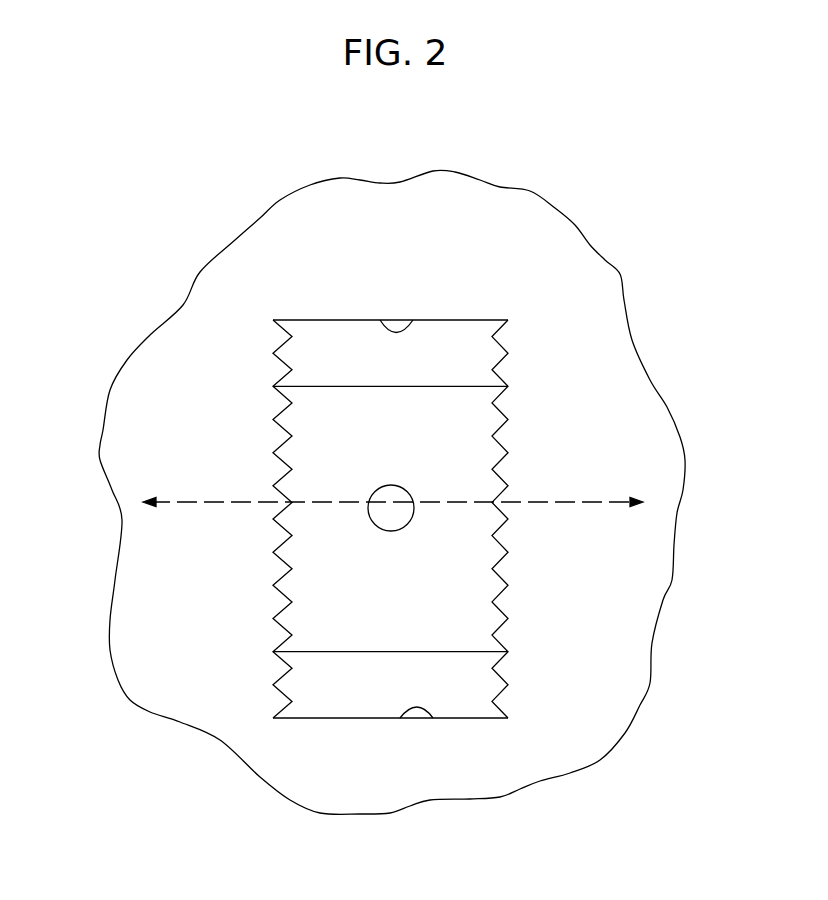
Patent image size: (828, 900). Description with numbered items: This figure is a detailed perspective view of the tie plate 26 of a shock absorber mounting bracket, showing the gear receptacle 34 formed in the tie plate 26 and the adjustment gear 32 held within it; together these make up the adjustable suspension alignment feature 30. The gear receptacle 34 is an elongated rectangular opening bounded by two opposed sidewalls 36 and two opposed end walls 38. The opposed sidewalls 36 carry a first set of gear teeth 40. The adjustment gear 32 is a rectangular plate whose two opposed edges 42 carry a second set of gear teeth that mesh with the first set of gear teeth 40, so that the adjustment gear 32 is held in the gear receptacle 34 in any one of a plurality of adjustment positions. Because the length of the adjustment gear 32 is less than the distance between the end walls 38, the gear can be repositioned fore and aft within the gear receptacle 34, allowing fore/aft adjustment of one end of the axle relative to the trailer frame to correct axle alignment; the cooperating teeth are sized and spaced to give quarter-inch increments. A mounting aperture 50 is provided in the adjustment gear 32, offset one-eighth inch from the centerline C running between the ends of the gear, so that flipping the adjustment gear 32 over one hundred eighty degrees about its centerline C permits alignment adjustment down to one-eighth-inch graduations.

The tie plate 26 is at (540, 248).
The adjustable suspension alignment feature 30 is at (394, 487).
The adjustment gear 32 is at (371, 448).
The gear receptacle 34 is at (333, 692).
The opposed sidewalls 36 is at (297, 520).
The opposed end walls 38 is at (383, 331).
The first set of gear teeth 40 is at (283, 420).
The opposed edges 42 is at (280, 437).
The mounting aperture 50 is at (395, 531).
The centerline C is at (573, 503).